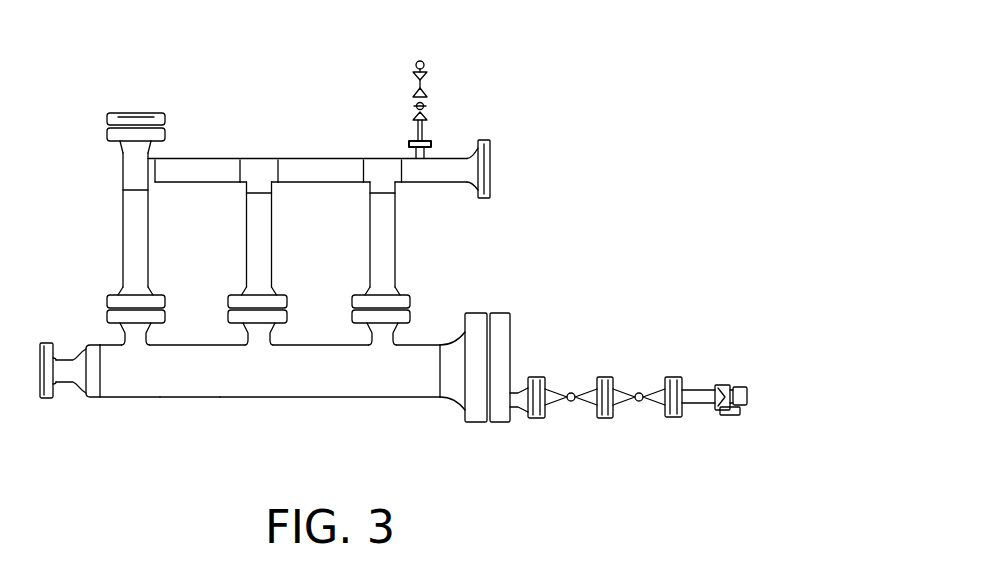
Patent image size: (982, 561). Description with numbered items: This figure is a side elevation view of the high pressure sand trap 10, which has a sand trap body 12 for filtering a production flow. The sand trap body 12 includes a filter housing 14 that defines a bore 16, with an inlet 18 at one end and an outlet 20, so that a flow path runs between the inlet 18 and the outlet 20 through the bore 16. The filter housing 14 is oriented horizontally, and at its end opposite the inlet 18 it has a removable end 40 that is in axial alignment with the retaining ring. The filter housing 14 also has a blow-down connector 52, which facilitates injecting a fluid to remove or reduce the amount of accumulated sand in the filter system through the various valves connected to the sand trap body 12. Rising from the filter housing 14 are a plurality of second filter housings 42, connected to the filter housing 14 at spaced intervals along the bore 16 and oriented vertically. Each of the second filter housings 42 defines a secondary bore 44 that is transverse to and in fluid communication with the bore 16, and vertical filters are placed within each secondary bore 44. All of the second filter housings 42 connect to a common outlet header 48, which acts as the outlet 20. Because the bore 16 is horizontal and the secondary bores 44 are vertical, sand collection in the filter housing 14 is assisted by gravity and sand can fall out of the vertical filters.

The high pressure sand trap 10 is at (660, 123).
The sand trap body 12 is at (415, 378).
The filter housing 14 is at (145, 384).
The bore 16 is at (185, 384).
The inlet 18 is at (44, 398).
The outlet 20 is at (485, 150).
The removable end 40 is at (503, 408).
The second filter housings 42 is at (383, 200).
The secondary bore 44 is at (383, 265).
The common outlet header 48 is at (313, 165).
The blow-down connector 52 is at (606, 420).